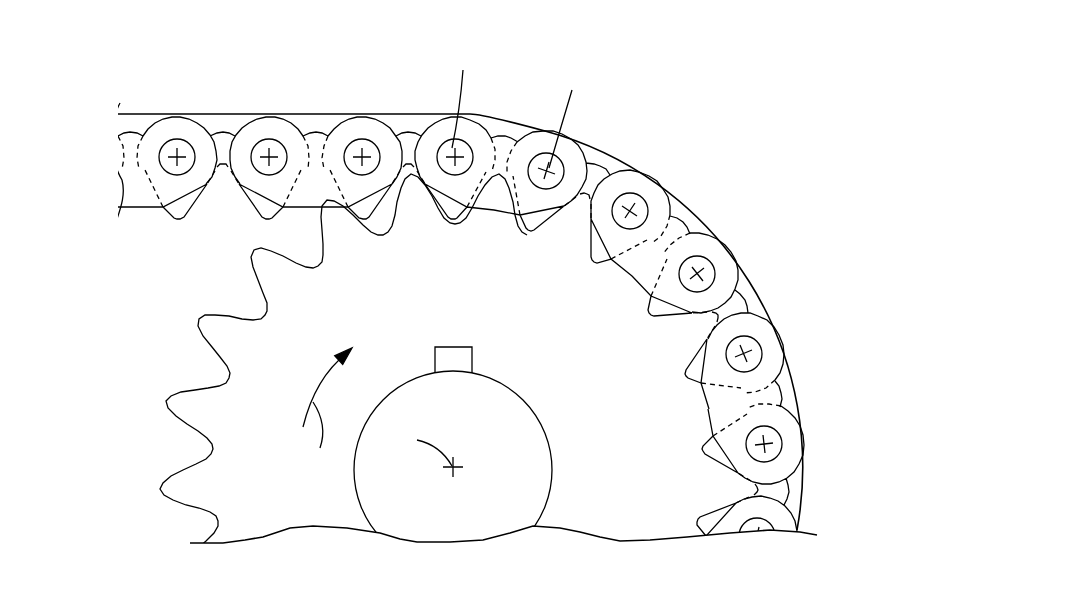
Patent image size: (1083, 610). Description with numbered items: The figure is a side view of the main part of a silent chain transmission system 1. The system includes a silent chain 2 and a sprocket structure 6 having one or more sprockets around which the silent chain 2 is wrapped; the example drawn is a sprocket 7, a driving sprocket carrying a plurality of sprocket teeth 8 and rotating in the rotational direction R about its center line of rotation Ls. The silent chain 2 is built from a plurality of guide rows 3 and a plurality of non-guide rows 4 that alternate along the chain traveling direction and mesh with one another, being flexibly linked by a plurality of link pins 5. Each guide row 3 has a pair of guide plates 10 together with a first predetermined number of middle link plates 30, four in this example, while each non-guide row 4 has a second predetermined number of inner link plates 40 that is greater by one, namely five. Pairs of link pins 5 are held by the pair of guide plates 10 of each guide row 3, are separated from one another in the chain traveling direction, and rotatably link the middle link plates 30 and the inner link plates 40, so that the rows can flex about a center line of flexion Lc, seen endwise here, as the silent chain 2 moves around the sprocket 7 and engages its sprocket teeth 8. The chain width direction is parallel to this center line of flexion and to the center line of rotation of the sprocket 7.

The silent chain transmission system 1 is at (760, 78).
The silent chain 2 is at (172, 242).
The guide row 3 is at (513, 100).
The non-guide row 4 is at (412, 96).
The link pin 5 is at (358, 147).
The sprocket structure 6 is at (346, 381).
The sprocket 7 is at (346, 381).
The sprocket tooth 8 is at (220, 323).
The guide plate 10 is at (310, 193).
The middle link plate 30 is at (599, 133).
The inner link plate 40 is at (340, 119).